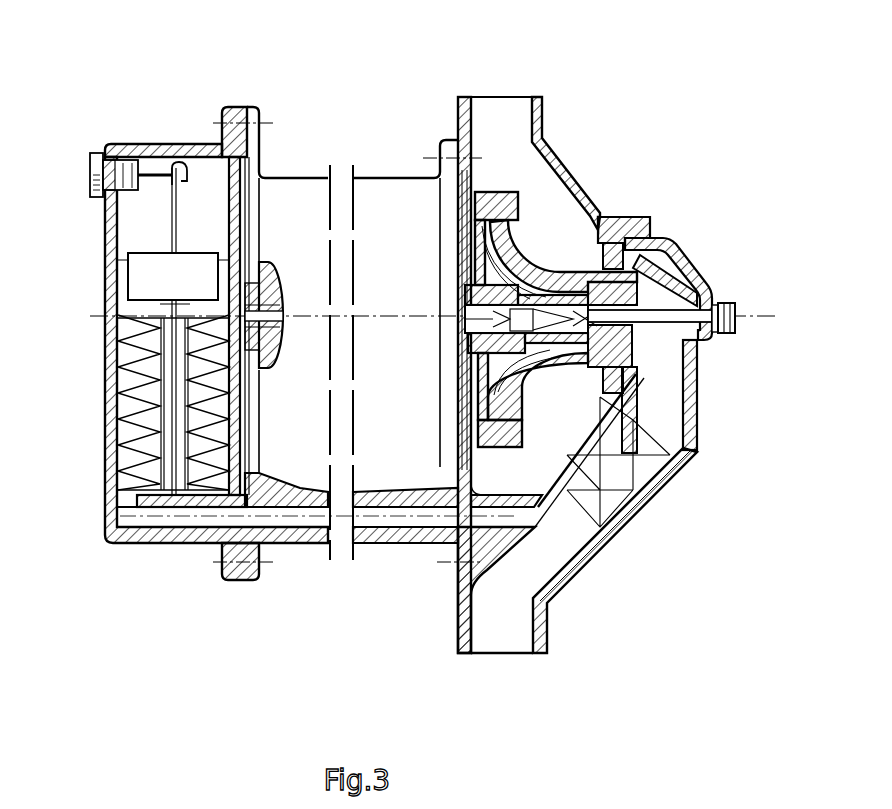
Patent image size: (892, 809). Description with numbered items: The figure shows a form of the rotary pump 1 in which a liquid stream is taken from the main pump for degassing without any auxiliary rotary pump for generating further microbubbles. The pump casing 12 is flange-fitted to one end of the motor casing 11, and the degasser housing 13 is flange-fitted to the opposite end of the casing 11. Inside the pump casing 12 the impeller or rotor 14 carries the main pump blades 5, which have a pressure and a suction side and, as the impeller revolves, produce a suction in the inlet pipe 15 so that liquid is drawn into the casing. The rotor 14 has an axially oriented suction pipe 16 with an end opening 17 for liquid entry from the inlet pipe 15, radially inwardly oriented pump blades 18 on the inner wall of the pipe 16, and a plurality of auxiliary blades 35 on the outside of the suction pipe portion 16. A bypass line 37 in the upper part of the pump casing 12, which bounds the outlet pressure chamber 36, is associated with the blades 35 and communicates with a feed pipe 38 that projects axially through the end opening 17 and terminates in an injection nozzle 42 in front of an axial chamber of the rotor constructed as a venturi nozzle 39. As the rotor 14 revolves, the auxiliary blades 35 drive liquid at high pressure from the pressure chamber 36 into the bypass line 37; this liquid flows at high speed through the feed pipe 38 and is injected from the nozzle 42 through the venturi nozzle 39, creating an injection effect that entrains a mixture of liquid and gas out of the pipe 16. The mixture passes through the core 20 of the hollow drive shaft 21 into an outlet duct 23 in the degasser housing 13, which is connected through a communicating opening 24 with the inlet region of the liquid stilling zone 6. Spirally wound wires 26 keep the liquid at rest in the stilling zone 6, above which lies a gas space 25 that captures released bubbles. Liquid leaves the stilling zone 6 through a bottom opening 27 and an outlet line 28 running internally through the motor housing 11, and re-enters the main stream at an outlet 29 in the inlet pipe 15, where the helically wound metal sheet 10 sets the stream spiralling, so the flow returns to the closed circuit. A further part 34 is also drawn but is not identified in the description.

The rotary pump 1 is at (436, 660).
The main pump blades 5 is at (480, 190).
The liquid stilling zone 6 is at (126, 307).
The helically wound metal sheet 10 is at (614, 494).
The motor casing 11 is at (292, 192).
The pump casing 12 is at (539, 97).
The degasser housing 13 is at (127, 145).
The impeller 14 is at (541, 223).
The inlet pipe 15 is at (664, 357).
The suction pipe 16 is at (650, 445).
The end opening 17 is at (628, 293).
The pump blades 18 is at (640, 248).
The core 20 is at (470, 305).
The hollow drive shaft 21 is at (480, 318).
The outlet duct 23 is at (292, 497).
The communicating opening 24 is at (202, 560).
The gas space 25 is at (130, 228).
The spirally wound wires 26 is at (123, 397).
The bottom opening 27 is at (123, 500).
The outlet line 28 is at (390, 514).
The outlet 29 is at (519, 514).
The nut 34 is at (738, 318).
The auxiliary blades 35 is at (618, 244).
The outlet pressure chamber 36 is at (552, 238).
The bypass line 37 is at (690, 262).
The feed pipe 38 is at (705, 300).
The venturi nozzle 39 is at (575, 266).
The injection nozzle 42 is at (632, 355).